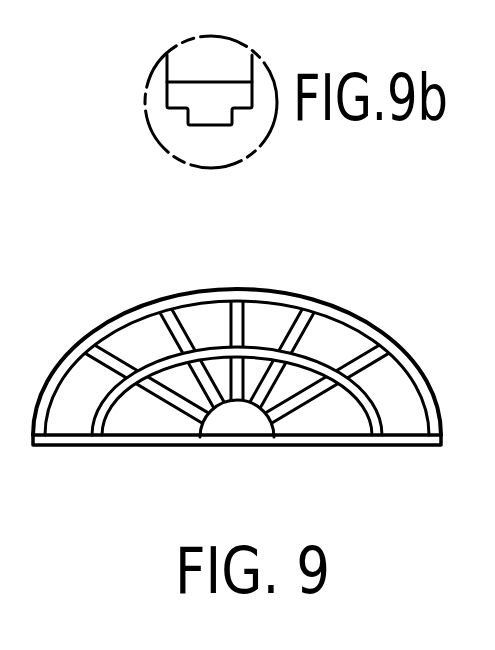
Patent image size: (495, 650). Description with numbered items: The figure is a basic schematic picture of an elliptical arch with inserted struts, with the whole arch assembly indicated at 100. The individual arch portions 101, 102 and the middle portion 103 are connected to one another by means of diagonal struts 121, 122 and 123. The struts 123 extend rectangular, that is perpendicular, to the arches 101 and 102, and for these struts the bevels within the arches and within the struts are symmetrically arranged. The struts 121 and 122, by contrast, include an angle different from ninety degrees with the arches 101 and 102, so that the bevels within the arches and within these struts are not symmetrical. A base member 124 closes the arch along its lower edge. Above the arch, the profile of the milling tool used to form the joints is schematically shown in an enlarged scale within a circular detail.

The support frame 100 is at (237, 345).
The arch portion 101 is at (340, 313).
The arch portion 102 is at (367, 405).
The middle portion 103 is at (256, 424).
The diagonal strut 121 is at (103, 350).
The diagonal strut 122 is at (172, 318).
The strut 123 is at (246, 323).
The base bar 124 is at (128, 440).